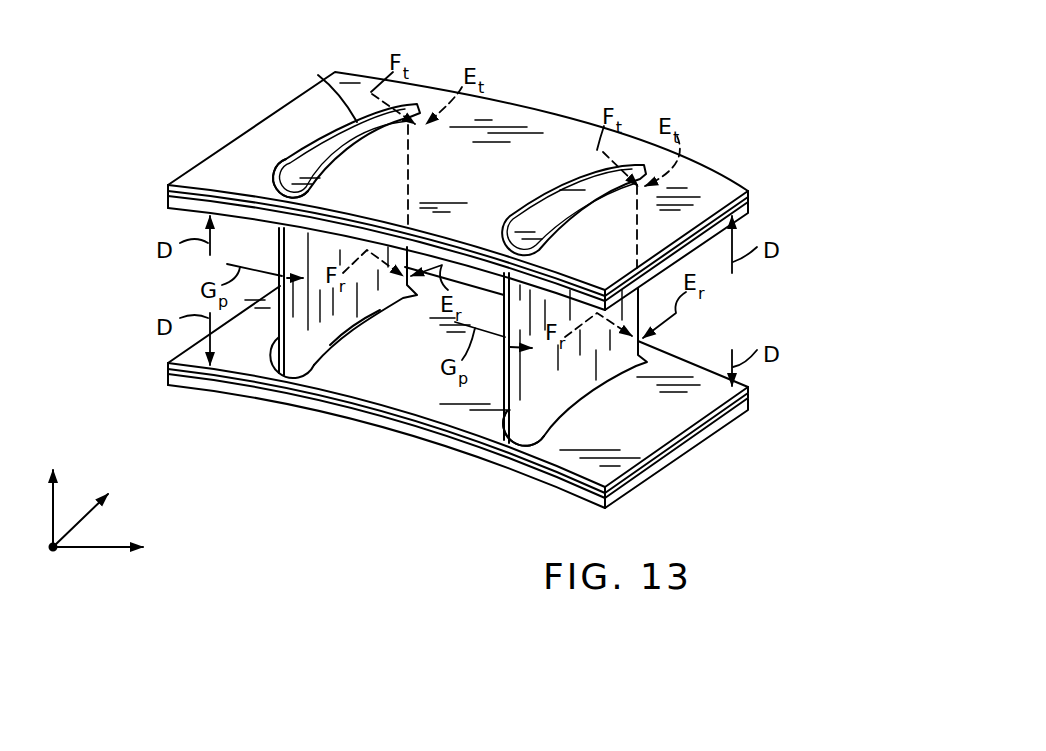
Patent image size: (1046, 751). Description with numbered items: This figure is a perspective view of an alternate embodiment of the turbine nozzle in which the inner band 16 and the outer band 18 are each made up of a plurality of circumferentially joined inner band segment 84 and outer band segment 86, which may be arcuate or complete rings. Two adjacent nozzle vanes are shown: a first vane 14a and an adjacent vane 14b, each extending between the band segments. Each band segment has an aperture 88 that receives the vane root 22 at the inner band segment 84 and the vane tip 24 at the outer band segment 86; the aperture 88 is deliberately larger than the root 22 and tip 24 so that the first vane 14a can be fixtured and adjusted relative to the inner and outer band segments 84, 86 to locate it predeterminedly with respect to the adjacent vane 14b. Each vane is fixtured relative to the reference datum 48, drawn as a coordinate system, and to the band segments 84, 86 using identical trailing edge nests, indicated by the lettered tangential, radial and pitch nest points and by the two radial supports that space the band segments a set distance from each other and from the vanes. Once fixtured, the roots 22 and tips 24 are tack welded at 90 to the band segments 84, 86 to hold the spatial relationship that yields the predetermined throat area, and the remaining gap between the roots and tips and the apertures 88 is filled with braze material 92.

The outer band 18 is at (277, 105).
The inner band 16 is at (205, 398).
The first vane 14a is at (490, 455).
The adjacent vane 14b is at (281, 378).
The vane root 22 is at (334, 339).
The vane tip 24 is at (297, 166).
The reference datum 48 is at (53, 547).
The inner band segment 84 is at (688, 412).
The outer band segment 86 is at (722, 200).
The aperture 88 is at (278, 168).
The tack weld 90 is at (330, 420).
The braze material 92 is at (548, 195).